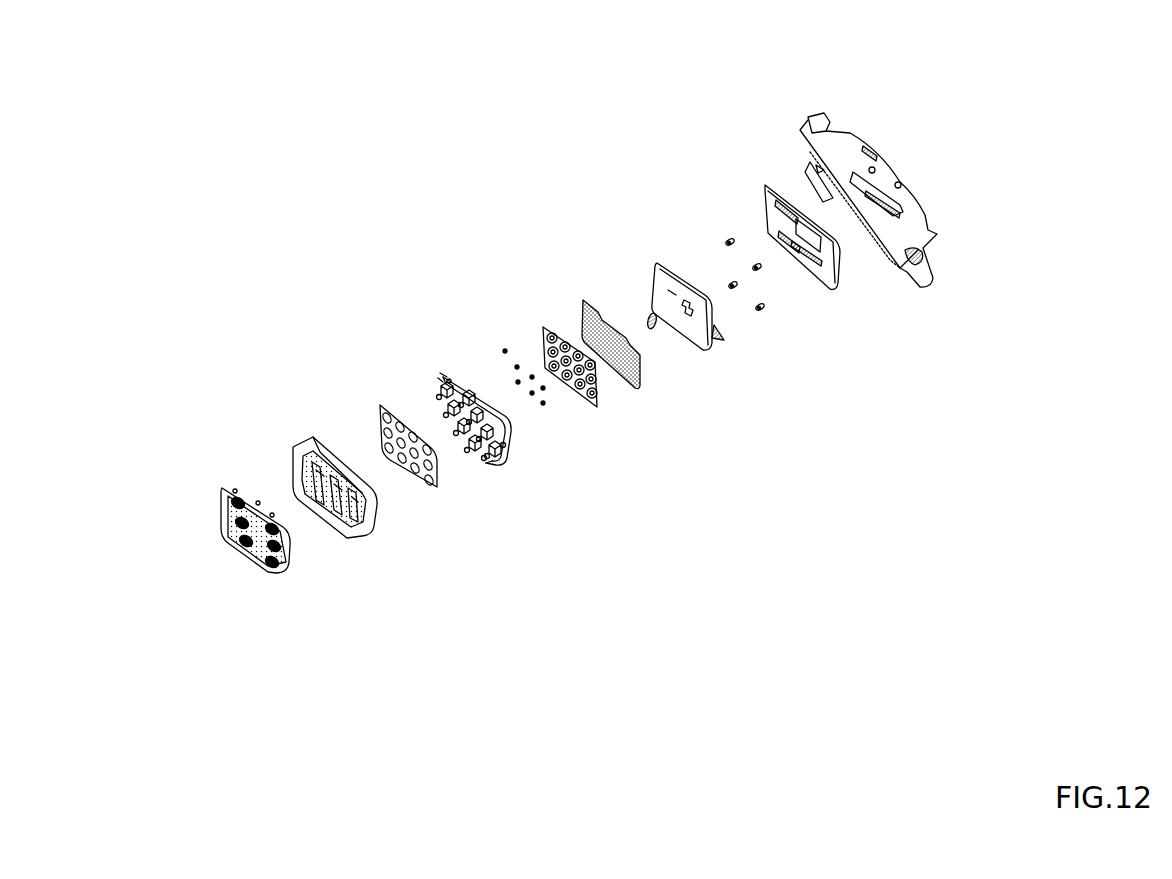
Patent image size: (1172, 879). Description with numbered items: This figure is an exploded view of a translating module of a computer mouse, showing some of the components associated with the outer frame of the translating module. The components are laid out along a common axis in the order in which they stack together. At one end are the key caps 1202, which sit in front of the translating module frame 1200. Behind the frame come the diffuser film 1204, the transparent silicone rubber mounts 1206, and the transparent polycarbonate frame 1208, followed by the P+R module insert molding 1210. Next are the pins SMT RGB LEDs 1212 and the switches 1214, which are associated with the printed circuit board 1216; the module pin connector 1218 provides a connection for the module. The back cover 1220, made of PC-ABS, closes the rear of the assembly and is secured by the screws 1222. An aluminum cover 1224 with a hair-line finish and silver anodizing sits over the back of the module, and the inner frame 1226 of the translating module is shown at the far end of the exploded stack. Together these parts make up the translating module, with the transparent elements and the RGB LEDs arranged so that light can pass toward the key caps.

The translating module frame 1200 is at (377, 528).
The key caps 1202 is at (288, 570).
The diffuser film 1204 is at (437, 490).
The transparent silicone rubber mounts 1206 is at (483, 456).
The transparent polycarbonate (PC) frame 1208 is at (505, 437).
The P+R module insert molding 1210 is at (440, 373).
The pins SMT RGB LEDs 1212 is at (507, 347).
The switches 1214 is at (546, 326).
The printed circuit board (PCB) 1216 is at (582, 298).
The module pin connector 1218 is at (650, 313).
The back cover 1220 is at (722, 345).
The screws 1222 is at (727, 238).
The Aluminum+Hair Line+Silver anodized cover 1224 is at (837, 293).
The mounting bracket 1226 is at (923, 200).